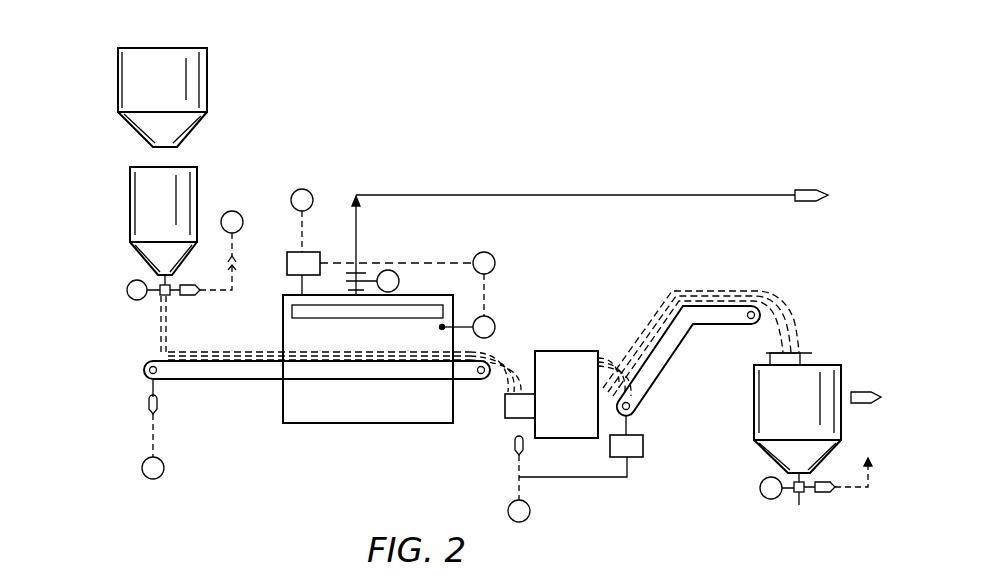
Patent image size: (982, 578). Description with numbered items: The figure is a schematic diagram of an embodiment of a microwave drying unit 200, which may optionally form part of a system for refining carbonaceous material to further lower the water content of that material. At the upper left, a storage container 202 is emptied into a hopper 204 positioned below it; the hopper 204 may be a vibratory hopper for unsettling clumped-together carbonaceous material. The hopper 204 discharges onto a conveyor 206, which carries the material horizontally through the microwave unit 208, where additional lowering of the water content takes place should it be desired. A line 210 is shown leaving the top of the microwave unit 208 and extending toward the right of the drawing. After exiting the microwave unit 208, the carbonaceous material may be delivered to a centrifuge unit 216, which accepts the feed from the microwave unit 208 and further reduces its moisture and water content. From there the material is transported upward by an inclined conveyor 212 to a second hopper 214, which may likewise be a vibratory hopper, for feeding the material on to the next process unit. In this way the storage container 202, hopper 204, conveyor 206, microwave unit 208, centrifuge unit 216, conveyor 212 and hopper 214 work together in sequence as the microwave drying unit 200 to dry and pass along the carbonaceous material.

The microwave drying unit 200 is at (543, 99).
The storage container 202 is at (117, 83).
The hopper 204 is at (130, 203).
The conveyor 206 is at (236, 382).
The microwave unit 208 is at (368, 425).
The output line 210 is at (676, 194).
The conveyor 212 is at (668, 374).
The hopper 214 is at (822, 360).
The centrifuge unit 216 is at (585, 407).